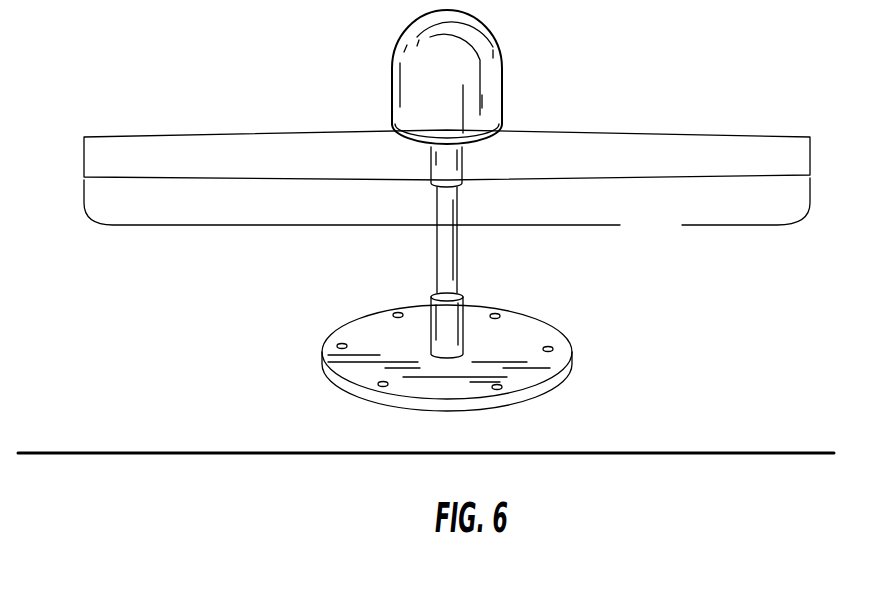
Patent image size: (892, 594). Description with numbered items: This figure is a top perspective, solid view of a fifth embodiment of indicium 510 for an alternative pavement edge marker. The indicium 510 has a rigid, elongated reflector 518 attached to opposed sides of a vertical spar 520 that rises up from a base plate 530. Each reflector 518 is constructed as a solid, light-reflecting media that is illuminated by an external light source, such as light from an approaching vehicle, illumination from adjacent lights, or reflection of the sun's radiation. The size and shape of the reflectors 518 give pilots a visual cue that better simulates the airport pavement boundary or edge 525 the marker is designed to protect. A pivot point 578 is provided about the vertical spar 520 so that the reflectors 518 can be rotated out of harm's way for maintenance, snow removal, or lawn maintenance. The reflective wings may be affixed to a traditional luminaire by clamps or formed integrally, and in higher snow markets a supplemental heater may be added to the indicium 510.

The indicium 510 is at (682, 225).
The reflector 518 is at (250, 142).
The vertical spar 520 is at (433, 238).
The airport pavement boundary/edge 525 is at (620, 452).
The base plate 530 is at (377, 338).
The pivot point 578 is at (453, 181).